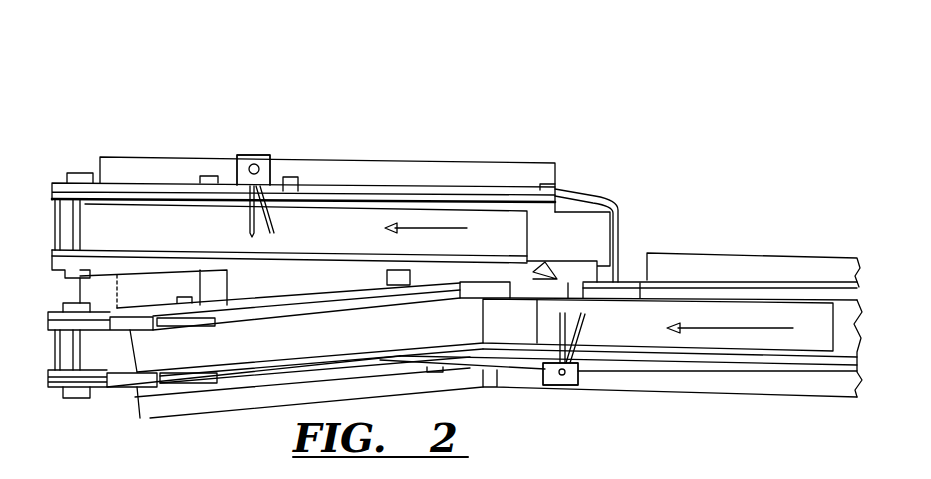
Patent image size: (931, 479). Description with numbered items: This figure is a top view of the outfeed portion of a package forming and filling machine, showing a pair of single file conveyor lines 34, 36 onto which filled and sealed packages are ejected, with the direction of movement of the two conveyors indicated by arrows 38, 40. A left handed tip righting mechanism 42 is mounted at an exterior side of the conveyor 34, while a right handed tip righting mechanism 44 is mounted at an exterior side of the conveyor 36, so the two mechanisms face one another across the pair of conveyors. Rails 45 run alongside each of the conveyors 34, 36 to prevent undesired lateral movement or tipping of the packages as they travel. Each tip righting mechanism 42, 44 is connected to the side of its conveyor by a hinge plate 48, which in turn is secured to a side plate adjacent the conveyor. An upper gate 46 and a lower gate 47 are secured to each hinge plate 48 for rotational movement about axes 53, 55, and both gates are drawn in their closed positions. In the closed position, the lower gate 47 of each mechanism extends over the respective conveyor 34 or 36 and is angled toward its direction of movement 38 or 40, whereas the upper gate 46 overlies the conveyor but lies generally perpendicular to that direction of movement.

The conveyor line 34 is at (803, 335).
The conveyor line 36 is at (366, 224).
The arrow indicating direction of movement 38 is at (717, 328).
The arrow indicating direction of movement 40 is at (430, 226).
The left handed tip righting mechanism 42 is at (571, 390).
The right handed tip righting mechanism 44 is at (262, 150).
The rails 45 is at (415, 282).
The upper gate 46 is at (250, 218).
The lower gate 47 is at (273, 216).
The hinge plate 48 is at (245, 162).
The axis 53 is at (560, 378).
The axis 55 is at (259, 167).